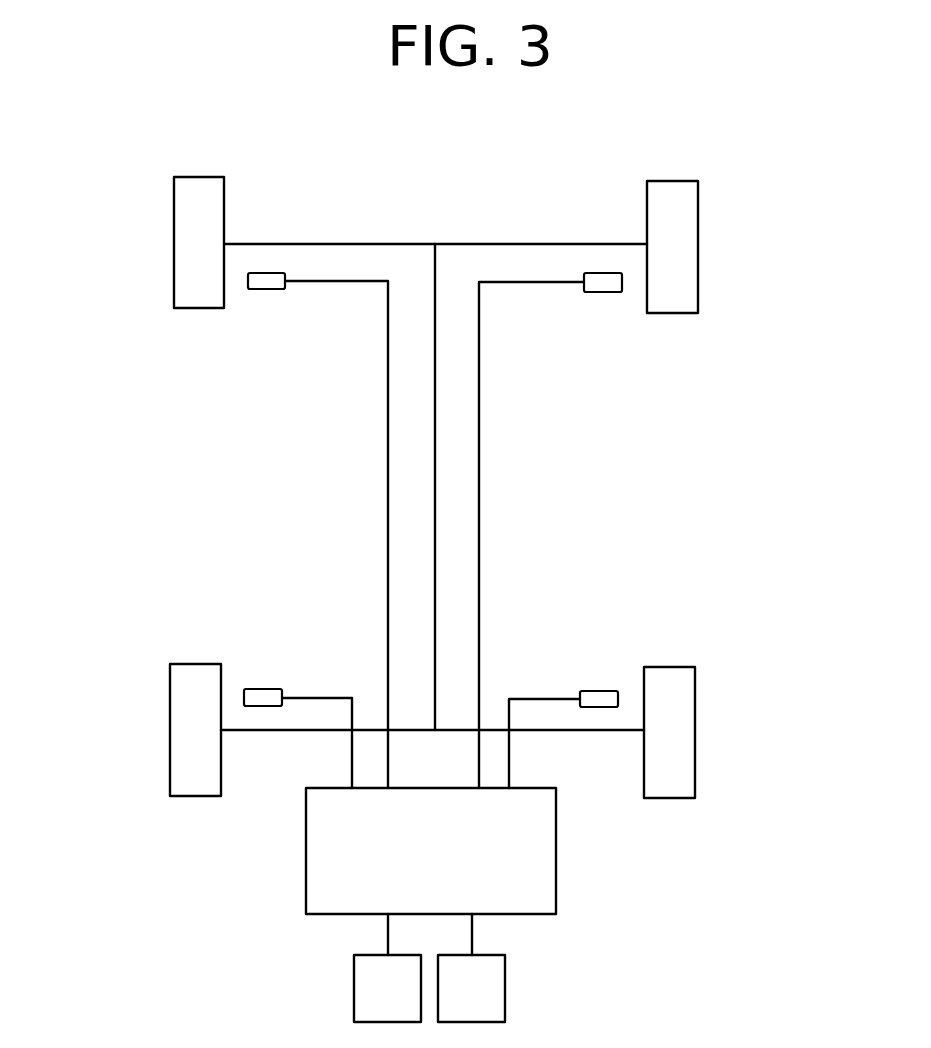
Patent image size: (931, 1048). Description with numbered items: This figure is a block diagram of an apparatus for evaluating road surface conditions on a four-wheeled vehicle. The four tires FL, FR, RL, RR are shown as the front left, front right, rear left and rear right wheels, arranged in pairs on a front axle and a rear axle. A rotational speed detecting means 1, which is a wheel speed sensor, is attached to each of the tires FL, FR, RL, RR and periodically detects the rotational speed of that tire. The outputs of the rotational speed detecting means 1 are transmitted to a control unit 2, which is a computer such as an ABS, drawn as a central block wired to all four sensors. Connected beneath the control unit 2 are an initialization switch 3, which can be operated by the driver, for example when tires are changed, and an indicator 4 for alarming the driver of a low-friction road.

The front left tire FL is at (187, 215).
The front right tire FR is at (682, 222).
The rear left tire RL is at (183, 712).
The rear right tire RR is at (678, 720).
The rotational speed detecting means 1 is at (258, 281).
The control unit 2 is at (540, 895).
The initialization switch 3 is at (367, 977).
The indicator 4 is at (493, 982).